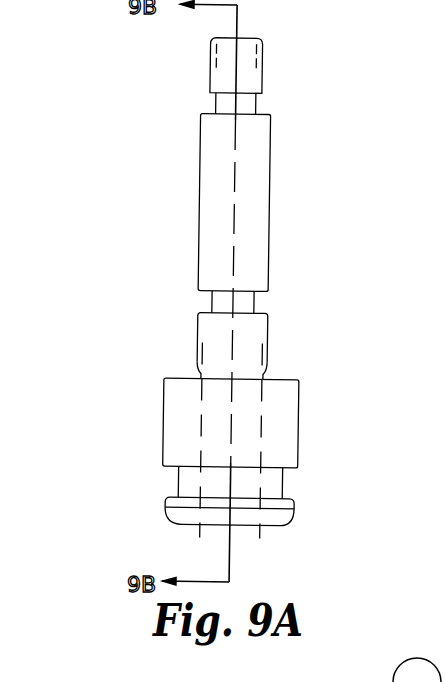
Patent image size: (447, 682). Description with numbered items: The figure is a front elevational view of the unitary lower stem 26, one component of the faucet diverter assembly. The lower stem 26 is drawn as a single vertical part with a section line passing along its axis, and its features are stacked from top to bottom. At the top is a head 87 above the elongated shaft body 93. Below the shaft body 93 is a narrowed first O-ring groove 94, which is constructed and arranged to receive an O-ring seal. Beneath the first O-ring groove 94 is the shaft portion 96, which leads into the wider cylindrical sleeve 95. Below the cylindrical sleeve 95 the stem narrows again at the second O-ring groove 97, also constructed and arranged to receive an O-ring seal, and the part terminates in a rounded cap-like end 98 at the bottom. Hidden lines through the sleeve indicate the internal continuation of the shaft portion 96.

The lower stem 26 is at (125, 237).
The head 87 is at (262, 65).
The shaft body 93 is at (200, 173).
The first O-ring groove 94 is at (212, 302).
The cylindrical sleeve 95 is at (163, 437).
The shaft portion 96 is at (198, 333).
The second O-ring groove 97 is at (178, 477).
The cap-like end 98 is at (175, 510).